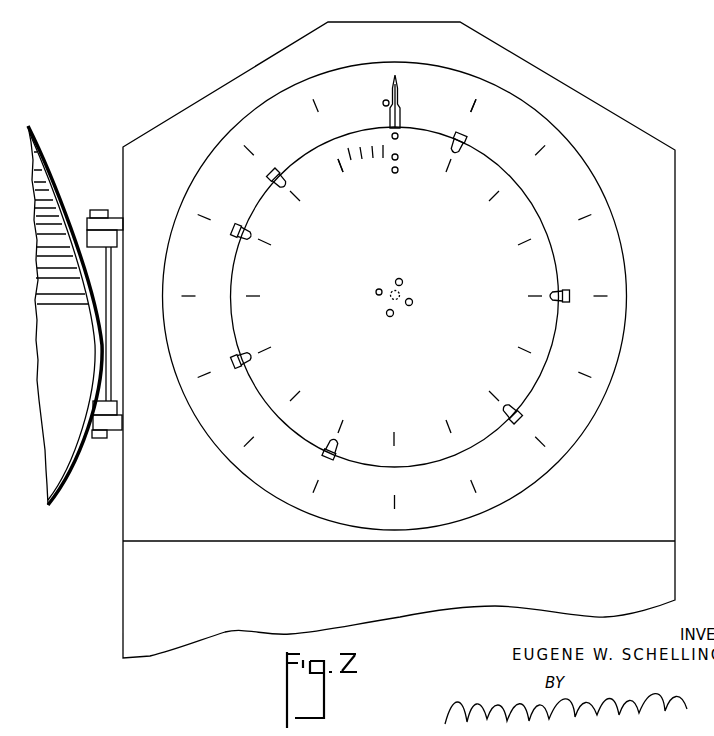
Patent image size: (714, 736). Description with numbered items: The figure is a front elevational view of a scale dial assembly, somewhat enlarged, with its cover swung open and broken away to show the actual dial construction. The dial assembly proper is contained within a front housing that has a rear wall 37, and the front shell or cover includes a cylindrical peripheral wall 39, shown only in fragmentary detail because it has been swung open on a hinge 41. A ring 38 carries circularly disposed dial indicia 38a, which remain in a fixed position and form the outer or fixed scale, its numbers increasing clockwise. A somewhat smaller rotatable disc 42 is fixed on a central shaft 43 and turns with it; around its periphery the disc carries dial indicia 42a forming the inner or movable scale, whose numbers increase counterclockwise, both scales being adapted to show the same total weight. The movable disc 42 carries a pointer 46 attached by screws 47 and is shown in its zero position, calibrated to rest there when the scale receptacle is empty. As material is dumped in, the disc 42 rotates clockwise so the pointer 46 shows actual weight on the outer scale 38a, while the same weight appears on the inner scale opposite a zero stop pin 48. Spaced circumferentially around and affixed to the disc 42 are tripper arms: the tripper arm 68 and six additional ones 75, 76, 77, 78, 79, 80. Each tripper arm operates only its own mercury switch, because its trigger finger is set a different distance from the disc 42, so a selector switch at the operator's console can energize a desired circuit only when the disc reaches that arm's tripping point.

The rear wall 37 is at (641, 131).
The ring 38 is at (613, 213).
The dial indicia 38a is at (480, 97).
The cylindrical peripheral wall 39 is at (45, 183).
The hinge 41 is at (100, 438).
The rotatable disc 42 is at (395, 297).
The dial indicia 42a is at (340, 166).
The central shaft 43 is at (410, 297).
The pointer 46 is at (399, 96).
The screws 47 is at (398, 139).
The zero stop pin 48 is at (383, 103).
The tripper arm 68 is at (466, 139).
The tripper arm 75 is at (554, 294).
The tripper arm 76 is at (510, 409).
The tripper arm 77 is at (338, 449).
The tripper arm 78 is at (251, 355).
The tripper arm 79 is at (252, 237).
The tripper arm 80 is at (284, 175).